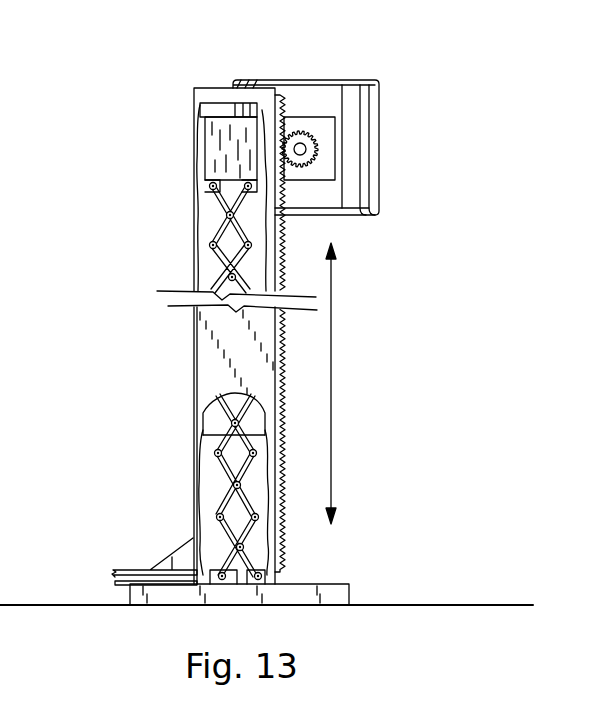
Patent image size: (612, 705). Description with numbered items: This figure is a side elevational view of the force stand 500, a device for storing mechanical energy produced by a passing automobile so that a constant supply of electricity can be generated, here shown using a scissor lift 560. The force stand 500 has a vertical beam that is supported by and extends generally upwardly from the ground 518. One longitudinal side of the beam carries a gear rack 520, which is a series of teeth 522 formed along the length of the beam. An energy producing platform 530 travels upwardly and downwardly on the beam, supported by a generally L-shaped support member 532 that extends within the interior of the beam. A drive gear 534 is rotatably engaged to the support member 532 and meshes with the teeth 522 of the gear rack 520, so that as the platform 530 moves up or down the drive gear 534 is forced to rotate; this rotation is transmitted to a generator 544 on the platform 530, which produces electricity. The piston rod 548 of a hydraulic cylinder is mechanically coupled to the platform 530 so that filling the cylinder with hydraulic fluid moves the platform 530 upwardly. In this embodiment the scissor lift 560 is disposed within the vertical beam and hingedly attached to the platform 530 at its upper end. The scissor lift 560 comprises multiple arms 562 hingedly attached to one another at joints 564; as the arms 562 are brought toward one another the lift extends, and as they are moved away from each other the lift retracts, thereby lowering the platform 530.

The force stand 500 is at (223, 75).
The ground 518 is at (425, 605).
The gear rack 520 is at (286, 238).
The teeth 522 is at (287, 388).
The energy producing platform 530 is at (330, 78).
The L-shaped support member 532 is at (332, 165).
The drive gear 534 is at (320, 182).
The generator 544 is at (380, 122).
The piston rod 548 is at (130, 571).
The scissor lift 560 is at (282, 533).
The arms 562 is at (225, 540).
The joints 564 is at (258, 516).